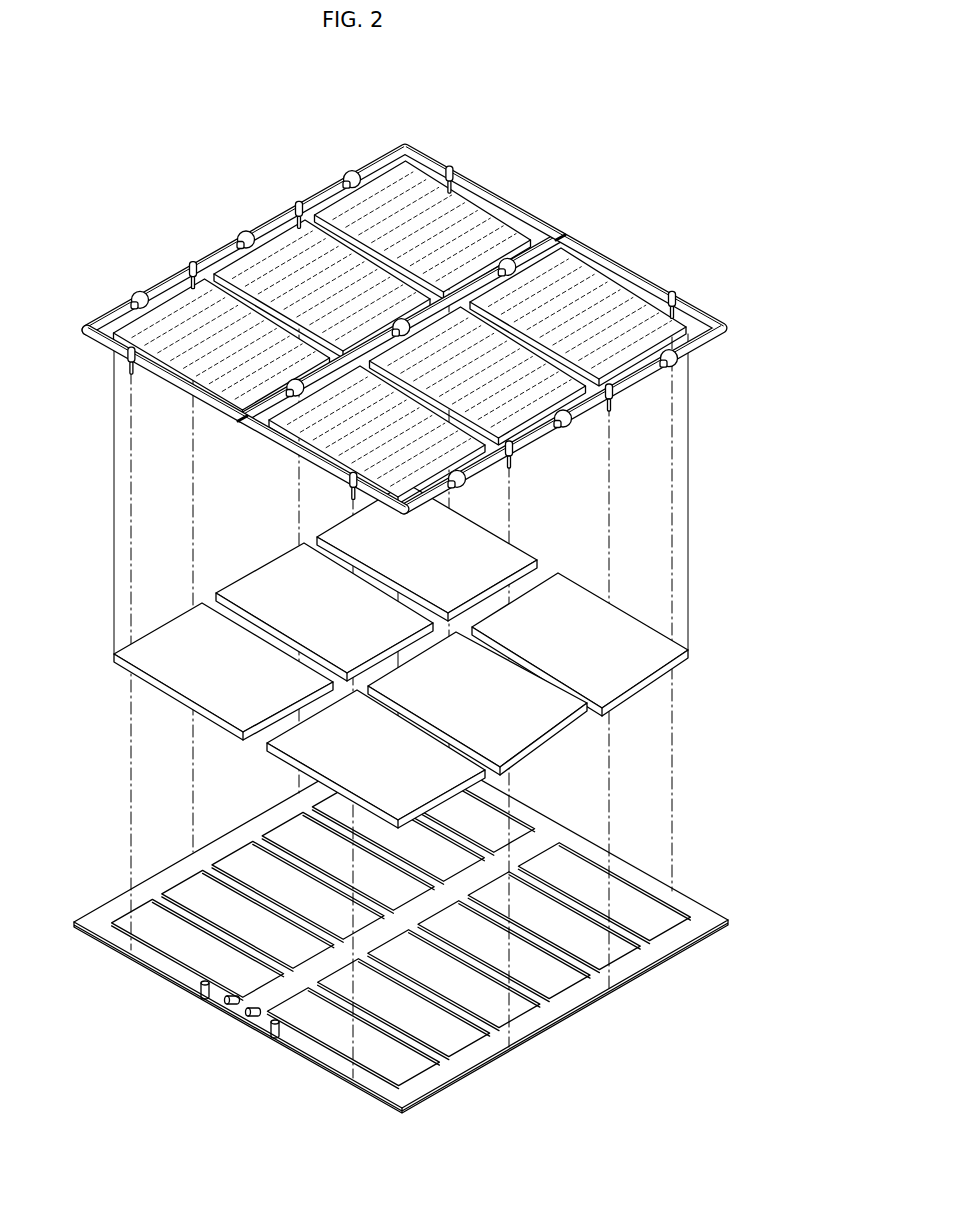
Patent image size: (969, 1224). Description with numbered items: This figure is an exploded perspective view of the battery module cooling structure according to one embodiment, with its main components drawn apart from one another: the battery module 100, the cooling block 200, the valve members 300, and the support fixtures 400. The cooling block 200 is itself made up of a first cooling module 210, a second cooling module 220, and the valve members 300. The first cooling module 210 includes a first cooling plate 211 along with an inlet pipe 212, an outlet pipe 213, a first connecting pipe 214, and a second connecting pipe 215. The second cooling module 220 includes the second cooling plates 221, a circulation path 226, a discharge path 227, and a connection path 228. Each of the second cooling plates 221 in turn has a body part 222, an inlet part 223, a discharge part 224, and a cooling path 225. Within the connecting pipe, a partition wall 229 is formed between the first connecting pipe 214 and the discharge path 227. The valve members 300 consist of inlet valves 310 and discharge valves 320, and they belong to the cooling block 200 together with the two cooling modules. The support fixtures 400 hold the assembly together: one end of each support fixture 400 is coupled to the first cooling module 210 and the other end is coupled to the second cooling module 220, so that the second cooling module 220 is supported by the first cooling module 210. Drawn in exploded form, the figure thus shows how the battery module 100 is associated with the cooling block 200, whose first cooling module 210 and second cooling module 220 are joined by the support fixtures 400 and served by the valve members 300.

The battery module 100 is at (155, 700).
The cooling block 200 is at (366, 630).
The first cooling module 210 is at (394, 923).
The first cooling plate 211 is at (137, 960).
The inlet pipe 212 is at (222, 1004).
The outlet pipe 213 is at (245, 1022).
The first connecting pipe 214 is at (198, 988).
The second connecting pipe 215 is at (244, 1060).
The second cooling module 220 is at (365, 348).
The second cooling plates 221 is at (722, 250).
The body parts 222 is at (574, 240).
The inlet parts 223 is at (655, 338).
The discharge parts 224 is at (547, 228).
The cooling paths 225 is at (605, 282).
The circulation path 226 is at (118, 352).
The discharge path 227 is at (253, 423).
The connection path 228 is at (180, 387).
The partition wall 229 is at (216, 410).
The valve members 300 is at (404, 284).
The inlet valves 310 is at (353, 171).
The discharge valves 320 is at (398, 320).
The support fixtures 400 is at (618, 402).